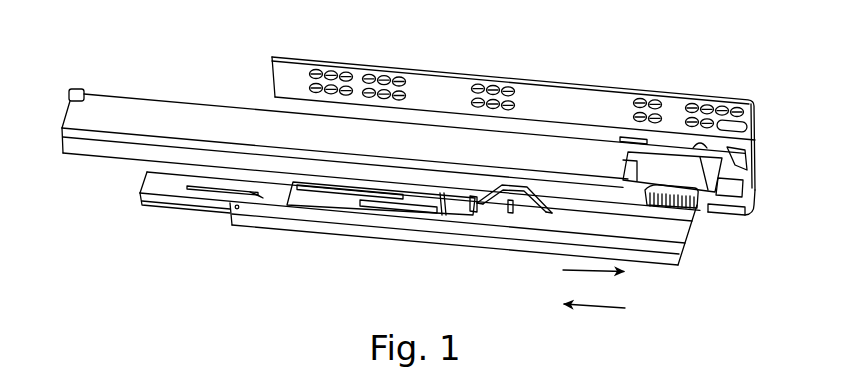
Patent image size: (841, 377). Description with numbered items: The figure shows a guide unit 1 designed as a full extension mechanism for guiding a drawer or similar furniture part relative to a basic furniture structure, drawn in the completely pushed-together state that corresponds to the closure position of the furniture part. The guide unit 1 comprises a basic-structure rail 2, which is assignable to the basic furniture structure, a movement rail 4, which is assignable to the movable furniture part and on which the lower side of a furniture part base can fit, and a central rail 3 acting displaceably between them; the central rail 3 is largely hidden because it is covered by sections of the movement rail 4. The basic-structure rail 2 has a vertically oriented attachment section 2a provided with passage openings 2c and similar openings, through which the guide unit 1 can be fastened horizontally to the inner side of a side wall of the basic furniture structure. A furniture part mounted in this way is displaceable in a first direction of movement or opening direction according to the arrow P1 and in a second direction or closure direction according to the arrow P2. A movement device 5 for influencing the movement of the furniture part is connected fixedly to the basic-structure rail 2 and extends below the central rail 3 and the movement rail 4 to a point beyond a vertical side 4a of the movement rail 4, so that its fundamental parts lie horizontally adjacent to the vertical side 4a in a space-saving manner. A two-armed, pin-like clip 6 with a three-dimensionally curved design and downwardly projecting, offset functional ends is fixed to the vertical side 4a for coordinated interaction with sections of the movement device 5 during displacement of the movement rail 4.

The guide unit 1 is at (229, 64).
The basic-structure rail 2 is at (471, 71).
The attachment section 2a is at (577, 93).
The passage openings 2c is at (337, 68).
The central rail 3 is at (136, 161).
The movement rail 4 is at (87, 161).
The vertical side of the movement rail 4a is at (667, 176).
The movement device 5 is at (277, 236).
The clip 6 is at (527, 201).
The arrow P1 is at (578, 271).
The arrow P2 is at (593, 307).